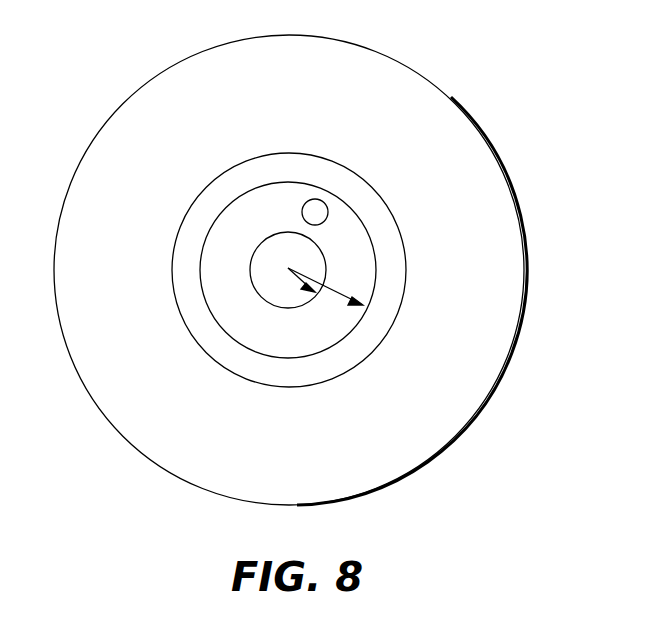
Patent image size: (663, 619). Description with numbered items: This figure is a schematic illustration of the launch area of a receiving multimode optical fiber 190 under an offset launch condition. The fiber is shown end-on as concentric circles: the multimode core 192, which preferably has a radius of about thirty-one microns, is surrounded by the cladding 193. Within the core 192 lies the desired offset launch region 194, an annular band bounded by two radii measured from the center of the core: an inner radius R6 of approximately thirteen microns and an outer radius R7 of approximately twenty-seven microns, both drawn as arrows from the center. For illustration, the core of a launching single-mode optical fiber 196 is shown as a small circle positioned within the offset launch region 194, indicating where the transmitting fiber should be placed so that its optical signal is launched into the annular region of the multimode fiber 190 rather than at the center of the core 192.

The receiving multimode optical fiber 190 is at (462, 63).
The core 192 is at (350, 185).
The cladding 193 is at (489, 203).
The offset launch region 194 is at (362, 265).
The core of launching single-mode optical fiber 196 is at (306, 201).
The inner radius of offset launch region R6 is at (297, 284).
The outer radius of offset launch region R7 is at (342, 298).